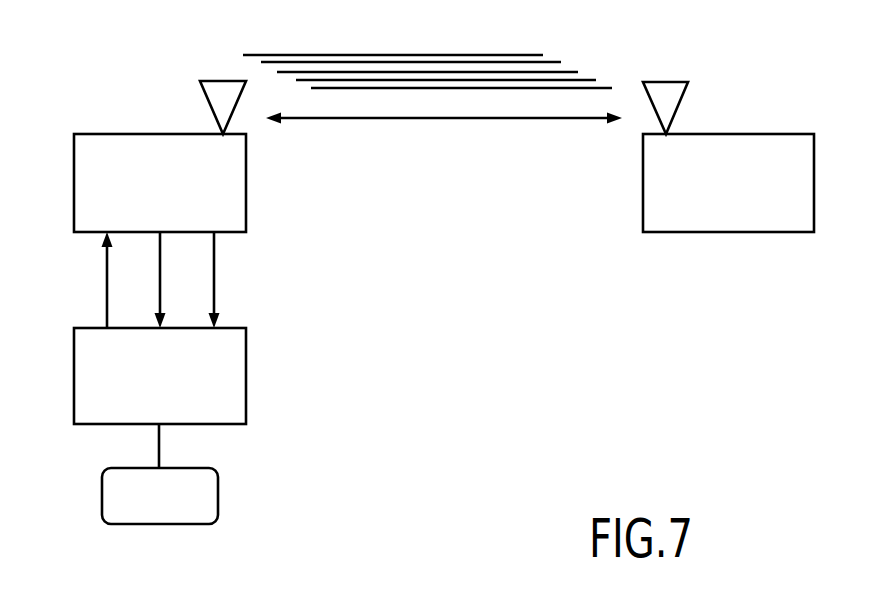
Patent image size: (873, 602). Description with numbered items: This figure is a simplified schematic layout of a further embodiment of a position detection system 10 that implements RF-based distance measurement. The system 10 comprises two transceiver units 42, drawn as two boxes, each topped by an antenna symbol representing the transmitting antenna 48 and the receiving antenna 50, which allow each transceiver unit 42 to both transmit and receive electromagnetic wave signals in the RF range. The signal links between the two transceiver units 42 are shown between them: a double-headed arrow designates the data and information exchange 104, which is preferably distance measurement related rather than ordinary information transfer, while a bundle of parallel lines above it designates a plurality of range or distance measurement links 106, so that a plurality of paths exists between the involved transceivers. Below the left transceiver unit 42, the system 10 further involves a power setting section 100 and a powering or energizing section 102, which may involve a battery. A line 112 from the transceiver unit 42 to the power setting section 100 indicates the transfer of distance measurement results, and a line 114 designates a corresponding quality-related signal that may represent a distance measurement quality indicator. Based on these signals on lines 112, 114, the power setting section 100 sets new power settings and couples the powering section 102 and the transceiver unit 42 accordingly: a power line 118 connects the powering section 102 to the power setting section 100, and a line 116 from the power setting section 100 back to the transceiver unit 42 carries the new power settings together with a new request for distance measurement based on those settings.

The position detection system 10 is at (462, 372).
The transceiver unit 42 is at (246, 180).
The transmitting antenna 48 is at (217, 97).
The receiving antenna 50 is at (672, 97).
The power setting section 100 is at (246, 373).
The powering section 102 is at (219, 493).
The data and information exchange 104 is at (447, 120).
The distance measurement links 106 is at (528, 55).
The line 112 is at (162, 257).
The line 114 is at (215, 290).
The line 116 is at (107, 278).
The power line 118 is at (158, 443).